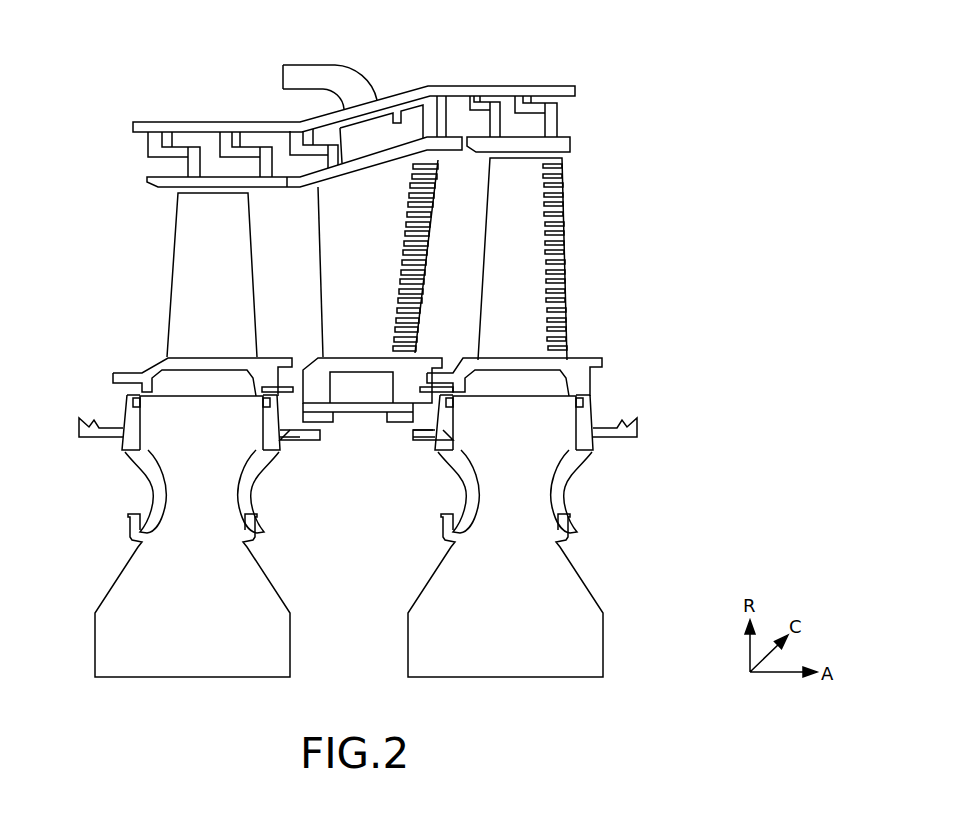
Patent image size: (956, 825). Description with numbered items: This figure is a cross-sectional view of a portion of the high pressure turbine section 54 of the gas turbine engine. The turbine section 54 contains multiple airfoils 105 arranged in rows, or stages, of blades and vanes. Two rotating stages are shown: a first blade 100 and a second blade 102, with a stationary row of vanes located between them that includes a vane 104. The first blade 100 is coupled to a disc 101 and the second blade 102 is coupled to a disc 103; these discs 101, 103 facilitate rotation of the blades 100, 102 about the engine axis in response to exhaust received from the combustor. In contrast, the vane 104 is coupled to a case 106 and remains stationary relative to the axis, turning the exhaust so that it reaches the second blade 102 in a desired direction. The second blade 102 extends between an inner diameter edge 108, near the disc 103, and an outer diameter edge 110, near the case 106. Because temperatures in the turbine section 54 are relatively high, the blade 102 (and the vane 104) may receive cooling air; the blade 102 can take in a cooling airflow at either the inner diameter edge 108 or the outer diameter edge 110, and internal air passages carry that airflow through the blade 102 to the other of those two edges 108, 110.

The high pressure turbine section 54 is at (640, 62).
The first blade 100 is at (175, 253).
The disc 101 is at (277, 598).
The second blade 102 is at (538, 204).
The disc 103 is at (596, 645).
The vane 104 is at (326, 264).
The airfoils 105 is at (138, 287).
The case 106 is at (431, 84).
The inner diameter edge 108 is at (530, 398).
The outer diameter edge 110 is at (538, 150).